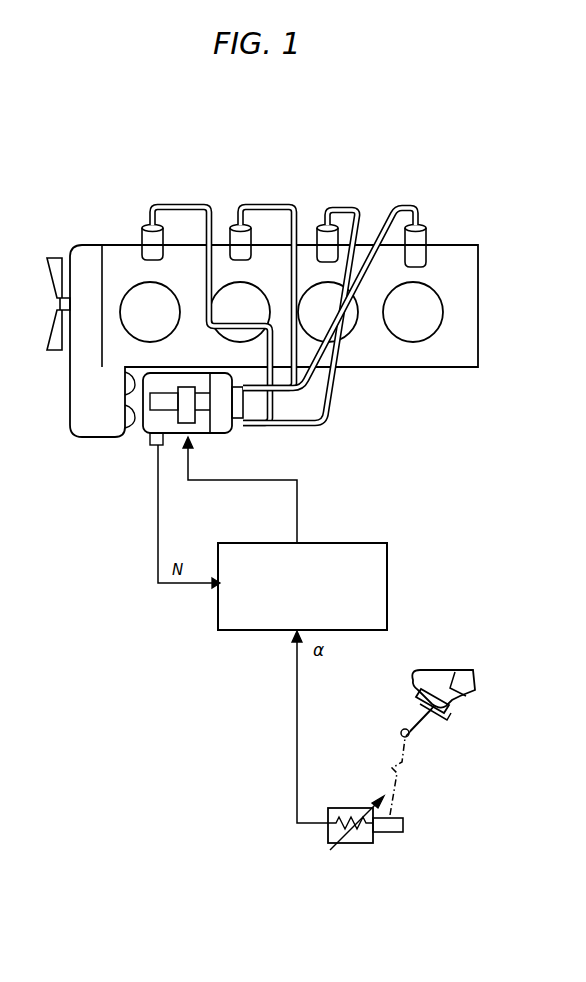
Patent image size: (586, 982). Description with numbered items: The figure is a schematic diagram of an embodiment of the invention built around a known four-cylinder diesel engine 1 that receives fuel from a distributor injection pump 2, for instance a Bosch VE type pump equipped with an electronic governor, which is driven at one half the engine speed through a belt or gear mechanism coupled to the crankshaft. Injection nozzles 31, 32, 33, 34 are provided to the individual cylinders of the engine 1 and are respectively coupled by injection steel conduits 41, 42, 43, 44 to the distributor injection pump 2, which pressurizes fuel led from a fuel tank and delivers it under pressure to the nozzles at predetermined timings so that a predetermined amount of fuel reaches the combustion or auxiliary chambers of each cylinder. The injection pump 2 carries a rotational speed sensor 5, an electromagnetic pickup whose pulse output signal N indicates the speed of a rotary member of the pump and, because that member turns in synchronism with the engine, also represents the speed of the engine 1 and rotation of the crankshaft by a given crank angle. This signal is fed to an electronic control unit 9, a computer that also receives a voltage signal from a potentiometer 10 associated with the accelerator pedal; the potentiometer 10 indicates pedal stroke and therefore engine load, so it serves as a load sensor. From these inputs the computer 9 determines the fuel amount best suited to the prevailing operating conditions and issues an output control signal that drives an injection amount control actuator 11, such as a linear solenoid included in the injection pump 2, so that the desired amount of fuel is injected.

The diesel engine 1 is at (480, 258).
The distributor injection pump 2 is at (208, 428).
The rotational speed sensor 5 is at (153, 447).
The electronic control unit 9 is at (345, 545).
The potentiometer 10 is at (342, 807).
The injection amount control actuator 11 is at (158, 412).
The injection nozzle 31 is at (141, 233).
The injection nozzle 32 is at (228, 236).
The injection nozzle 33 is at (318, 236).
The injection nozzle 34 is at (421, 241).
The injection steel conduit 41 is at (188, 204).
The injection steel conduit 42 is at (290, 205).
The injection steel conduit 43 is at (356, 200).
The injection steel conduit 44 is at (409, 208).